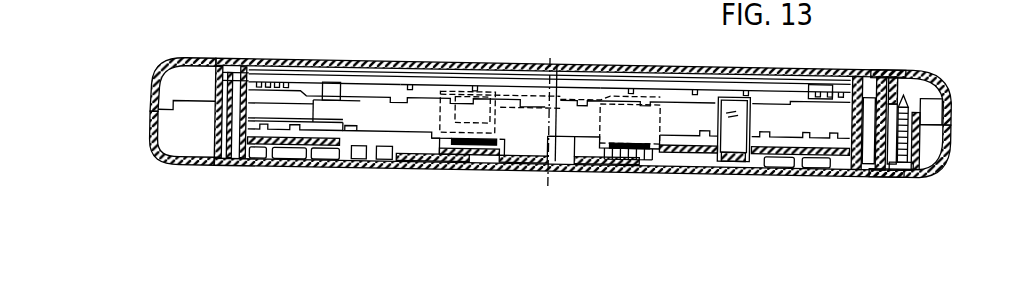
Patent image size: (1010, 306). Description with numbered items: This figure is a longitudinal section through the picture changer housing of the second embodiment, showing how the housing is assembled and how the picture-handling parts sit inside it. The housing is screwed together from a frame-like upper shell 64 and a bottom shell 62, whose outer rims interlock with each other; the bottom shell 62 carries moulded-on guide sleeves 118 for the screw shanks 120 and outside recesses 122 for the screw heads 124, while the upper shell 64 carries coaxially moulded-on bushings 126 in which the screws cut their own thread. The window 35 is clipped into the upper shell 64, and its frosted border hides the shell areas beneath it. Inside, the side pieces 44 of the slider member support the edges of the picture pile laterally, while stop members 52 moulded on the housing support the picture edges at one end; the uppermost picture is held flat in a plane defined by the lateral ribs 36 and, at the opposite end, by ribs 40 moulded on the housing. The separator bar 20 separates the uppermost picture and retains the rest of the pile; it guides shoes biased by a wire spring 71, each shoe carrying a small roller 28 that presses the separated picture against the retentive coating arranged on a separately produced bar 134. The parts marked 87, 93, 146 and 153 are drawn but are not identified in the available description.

The separator bar 20 is at (422, 93).
The roller 28 is at (662, 123).
The window 35 is at (485, 63).
The lateral ribs 36 is at (277, 79).
The ribs 40 is at (628, 81).
The side pieces 44 is at (246, 117).
The stop members 52 is at (322, 85).
The bottom shell 62 is at (185, 163).
The upper shell 64 is at (187, 62).
The wire spring 71 is at (572, 84).
The base plate 87 is at (503, 152).
The mounting plate 93 is at (523, 81).
The guide sleeves 118 is at (935, 124).
The screw shanks 120 is at (932, 160).
The recesses 122 is at (905, 166).
The screw heads 124 is at (908, 160).
The bushings 126 is at (918, 85).
The bar 134 is at (443, 148).
The connector module 146 is at (575, 159).
The bracket 153 is at (560, 169).